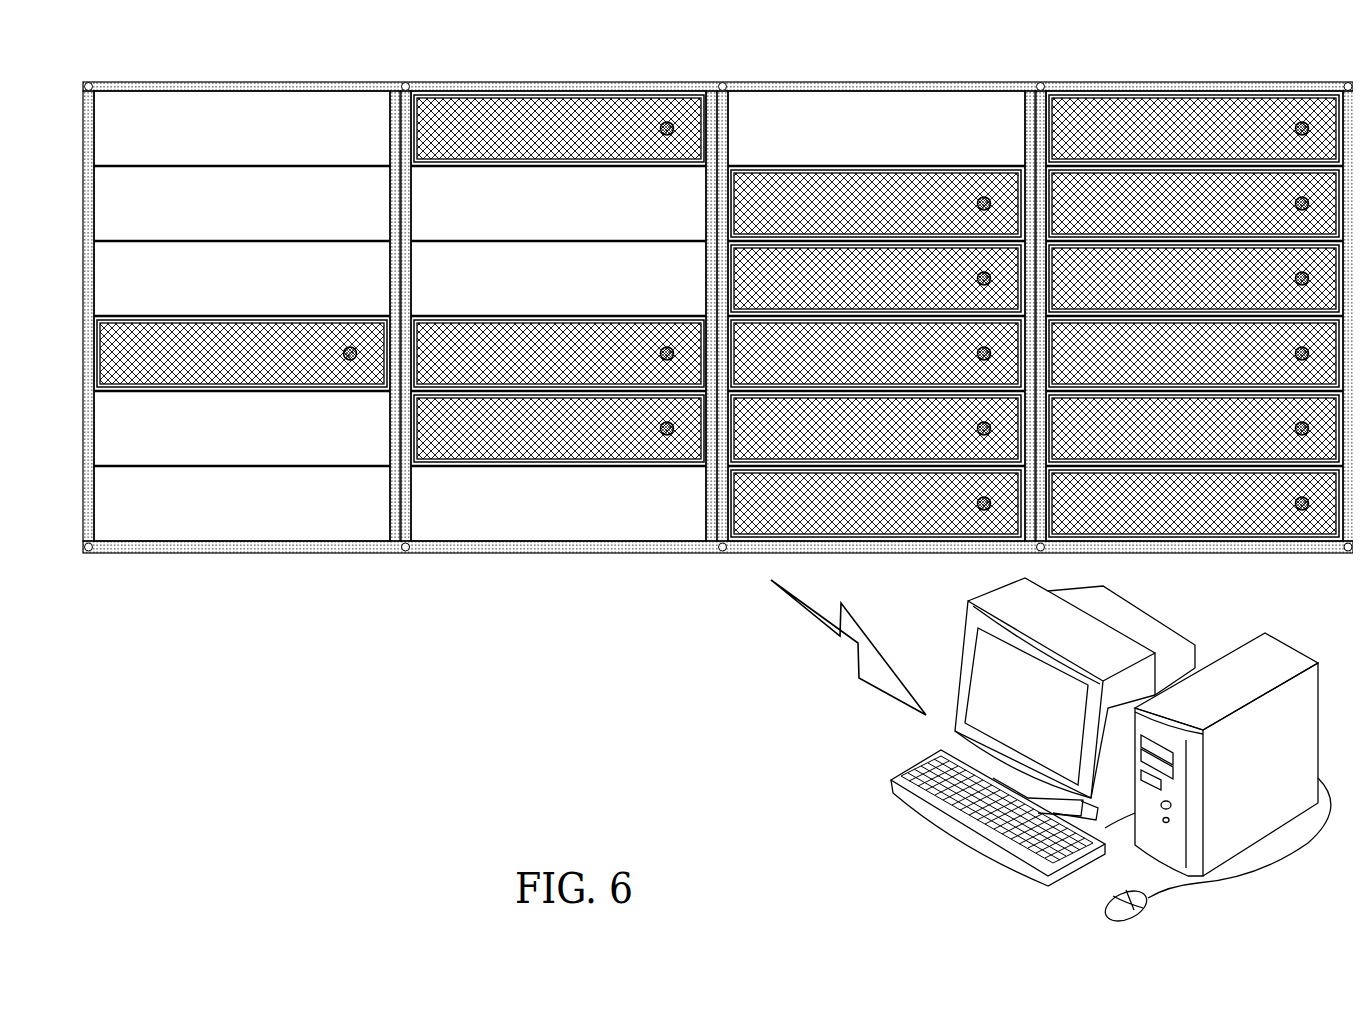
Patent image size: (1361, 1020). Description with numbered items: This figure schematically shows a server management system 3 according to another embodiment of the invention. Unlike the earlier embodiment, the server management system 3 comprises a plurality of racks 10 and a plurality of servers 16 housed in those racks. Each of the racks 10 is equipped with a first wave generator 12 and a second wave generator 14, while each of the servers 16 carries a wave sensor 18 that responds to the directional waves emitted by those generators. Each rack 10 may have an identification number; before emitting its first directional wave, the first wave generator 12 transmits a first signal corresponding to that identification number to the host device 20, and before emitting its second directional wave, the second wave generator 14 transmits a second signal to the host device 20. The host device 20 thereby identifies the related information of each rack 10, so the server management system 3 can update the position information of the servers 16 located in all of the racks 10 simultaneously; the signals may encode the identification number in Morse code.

The server management system 3 is at (718, 391).
The rack 10 is at (368, 78).
The first wave generator 12 is at (81, 74).
The second wave generator 14 is at (85, 545).
The server 16 is at (263, 328).
The wave sensor 18 is at (342, 336).
The host device 20 is at (1237, 606).